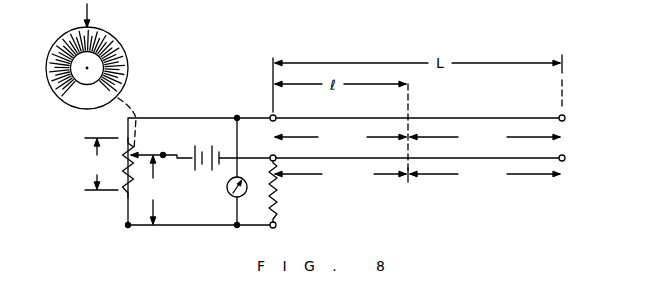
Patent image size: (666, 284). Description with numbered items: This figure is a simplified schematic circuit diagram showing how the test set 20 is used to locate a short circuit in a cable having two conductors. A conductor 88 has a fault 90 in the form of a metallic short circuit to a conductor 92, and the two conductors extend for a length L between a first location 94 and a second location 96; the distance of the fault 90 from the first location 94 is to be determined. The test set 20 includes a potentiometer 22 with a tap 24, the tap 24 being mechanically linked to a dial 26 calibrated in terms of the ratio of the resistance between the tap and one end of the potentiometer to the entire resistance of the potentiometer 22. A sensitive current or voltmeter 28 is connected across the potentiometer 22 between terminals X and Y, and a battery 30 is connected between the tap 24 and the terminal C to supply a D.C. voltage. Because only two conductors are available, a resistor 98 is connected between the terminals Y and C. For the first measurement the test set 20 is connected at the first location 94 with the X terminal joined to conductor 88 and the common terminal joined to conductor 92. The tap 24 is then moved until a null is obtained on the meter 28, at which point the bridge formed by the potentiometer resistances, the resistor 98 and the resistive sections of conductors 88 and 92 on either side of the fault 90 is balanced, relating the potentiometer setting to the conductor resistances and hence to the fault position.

The test set 20 is at (160, 231).
The potentiometer 22 is at (123, 190).
The tap 24 is at (134, 152).
The dial 26 is at (52, 88).
The meter 28 is at (230, 194).
The battery 30 is at (203, 152).
The conductor 88 is at (504, 116).
The fault 90 is at (412, 147).
The conductor 92 is at (547, 158).
The first location 94 is at (269, 114).
The second location 96 is at (569, 113).
The resistor 98 is at (280, 191).